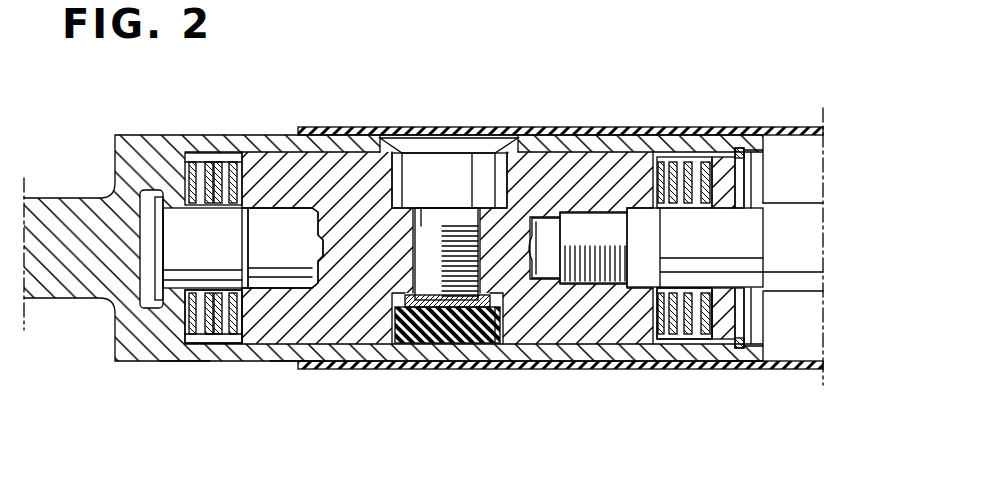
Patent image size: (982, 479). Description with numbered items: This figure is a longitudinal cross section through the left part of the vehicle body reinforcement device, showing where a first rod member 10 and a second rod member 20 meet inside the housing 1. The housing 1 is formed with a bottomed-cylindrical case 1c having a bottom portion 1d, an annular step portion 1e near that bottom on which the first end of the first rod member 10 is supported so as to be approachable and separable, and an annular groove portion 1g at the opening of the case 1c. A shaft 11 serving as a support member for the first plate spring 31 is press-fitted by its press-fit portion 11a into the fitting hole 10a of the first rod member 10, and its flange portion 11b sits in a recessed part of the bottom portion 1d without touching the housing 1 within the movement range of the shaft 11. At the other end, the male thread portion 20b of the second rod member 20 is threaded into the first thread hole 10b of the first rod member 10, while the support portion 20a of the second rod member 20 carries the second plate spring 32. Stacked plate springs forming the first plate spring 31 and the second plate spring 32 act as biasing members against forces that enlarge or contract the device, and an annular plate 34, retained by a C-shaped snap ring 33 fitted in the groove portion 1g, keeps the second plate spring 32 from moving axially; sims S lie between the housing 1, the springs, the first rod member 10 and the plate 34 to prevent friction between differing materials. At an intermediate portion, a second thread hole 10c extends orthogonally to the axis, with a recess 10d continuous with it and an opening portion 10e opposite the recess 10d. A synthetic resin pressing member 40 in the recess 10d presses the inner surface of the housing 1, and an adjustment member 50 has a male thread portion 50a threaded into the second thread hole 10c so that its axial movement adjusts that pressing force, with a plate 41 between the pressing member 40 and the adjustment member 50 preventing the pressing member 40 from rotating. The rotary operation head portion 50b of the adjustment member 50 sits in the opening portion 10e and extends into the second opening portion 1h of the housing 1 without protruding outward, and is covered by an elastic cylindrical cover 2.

The housing 1 is at (140, 131).
The case 1c is at (292, 357).
The bottom portion 1d is at (142, 307).
The step portion 1e is at (185, 350).
The groove portion 1g is at (742, 368).
The second opening portion 1h is at (396, 134).
The cylindrical cover 2 is at (328, 367).
The first rod member 10 is at (283, 318).
The fitting hole 10a is at (270, 282).
The first thread hole 10b is at (583, 283).
The second thread hole 10c is at (382, 282).
The recess 10d is at (500, 345).
The opening portion 10e is at (400, 180).
The shaft 11 is at (172, 220).
The press-fit portion 11a is at (283, 222).
The flange portion 11b is at (157, 267).
The second rod member 20 is at (792, 199).
The support portion 20a is at (750, 218).
The male thread portion 20b is at (593, 222).
The first plate spring 31 is at (205, 330).
The second plate spring 32 is at (678, 332).
The snap ring 33 is at (742, 340).
The plate 34 is at (718, 328).
The pressing member 40 is at (443, 337).
The plate 41 is at (485, 335).
The adjustment member 50 is at (486, 139).
The male thread portion 50a is at (433, 267).
The rotary operation head portion 50b is at (450, 170).
The sim S is at (195, 160).